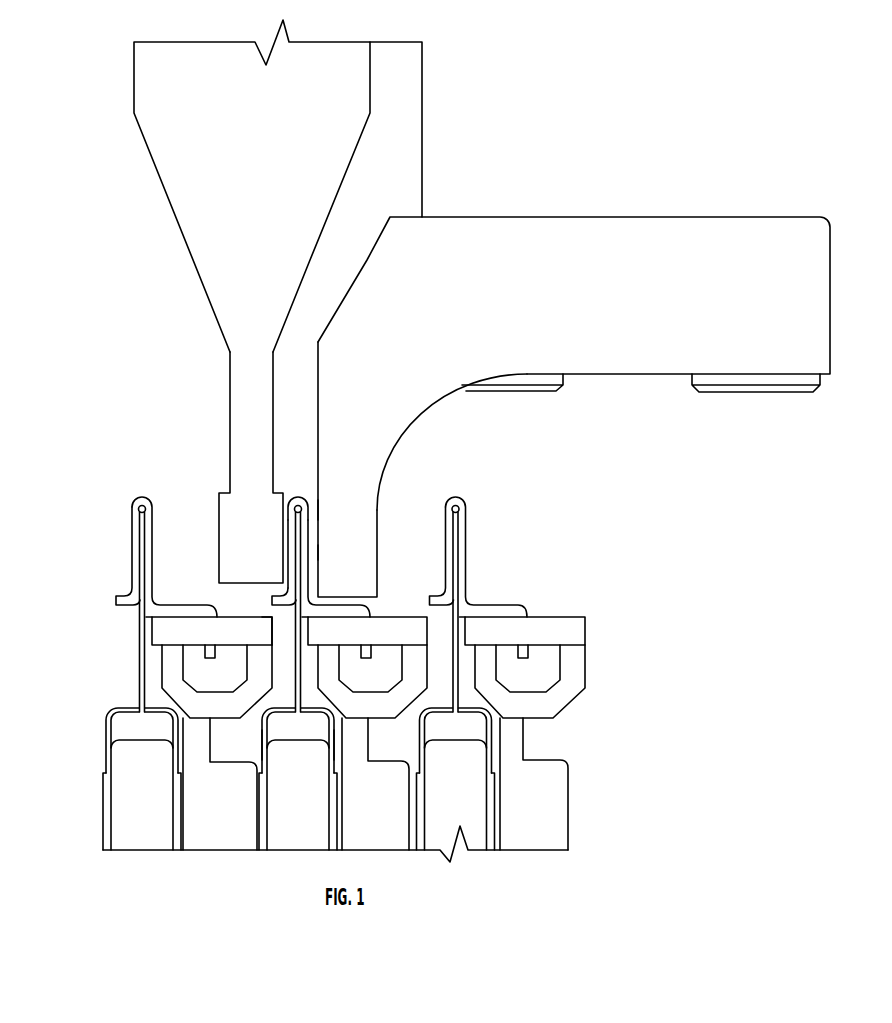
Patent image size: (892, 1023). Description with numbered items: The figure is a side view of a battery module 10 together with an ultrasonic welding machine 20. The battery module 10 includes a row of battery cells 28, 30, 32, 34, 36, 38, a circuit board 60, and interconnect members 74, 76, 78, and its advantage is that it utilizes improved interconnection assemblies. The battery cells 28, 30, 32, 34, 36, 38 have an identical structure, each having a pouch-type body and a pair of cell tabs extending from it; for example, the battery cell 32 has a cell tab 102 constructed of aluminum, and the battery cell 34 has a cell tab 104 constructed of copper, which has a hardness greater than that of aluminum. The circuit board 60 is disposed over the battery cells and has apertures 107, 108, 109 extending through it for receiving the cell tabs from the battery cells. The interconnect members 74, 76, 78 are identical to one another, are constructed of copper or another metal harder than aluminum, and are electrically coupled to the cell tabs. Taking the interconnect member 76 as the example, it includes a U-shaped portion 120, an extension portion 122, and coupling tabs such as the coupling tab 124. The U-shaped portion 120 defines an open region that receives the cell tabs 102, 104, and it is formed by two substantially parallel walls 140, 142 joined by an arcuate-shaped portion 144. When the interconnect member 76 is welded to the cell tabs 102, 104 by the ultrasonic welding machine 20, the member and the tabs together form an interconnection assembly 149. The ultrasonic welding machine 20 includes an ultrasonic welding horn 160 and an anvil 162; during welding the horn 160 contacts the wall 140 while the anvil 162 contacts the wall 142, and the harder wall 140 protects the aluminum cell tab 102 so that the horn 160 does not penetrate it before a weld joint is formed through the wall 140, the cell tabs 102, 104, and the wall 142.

The battery module 10 is at (76, 476).
The ultrasonic welding machine 20 is at (456, 308).
The battery cell 28 is at (111, 795).
The battery cell 30 is at (180, 800).
The battery cell 32 is at (263, 800).
The battery cell 34 is at (339, 800).
The battery cell 36 is at (420, 800).
The battery cell 38 is at (501, 800).
The circuit board 60 is at (585, 632).
The interconnect member 74 is at (153, 513).
The interconnect member 76 is at (311, 533).
The interconnect member 78 is at (460, 503).
The cell tab 102 is at (262, 726).
The cell tab 104 is at (330, 721).
The aperture 107 is at (152, 634).
The aperture 108 is at (275, 623).
The aperture 109 is at (432, 625).
The U-shaped portion 120 is at (318, 508).
The extension portion 122 is at (284, 599).
The coupling tab 124 is at (369, 648).
The wall 140 is at (288, 568).
The wall 142 is at (308, 562).
The arcuate-shaped portion 144 is at (300, 498).
The interconnection assembly 149 is at (326, 550).
The ultrasonic welding horn 160 is at (240, 376).
The anvil 162 is at (332, 394).